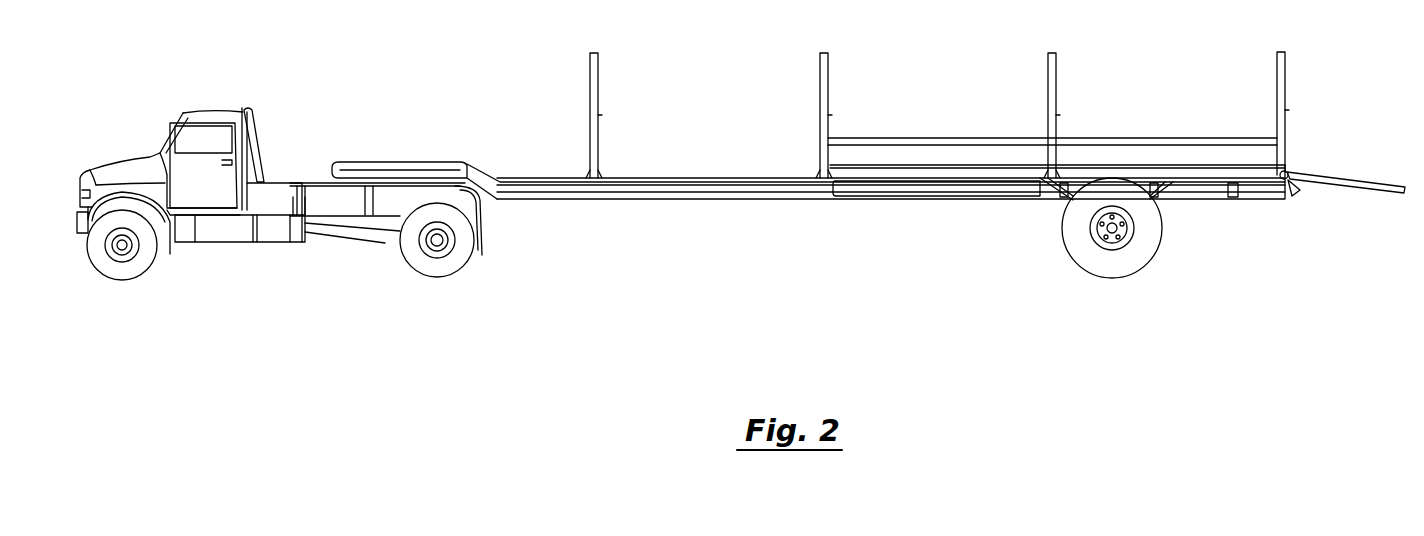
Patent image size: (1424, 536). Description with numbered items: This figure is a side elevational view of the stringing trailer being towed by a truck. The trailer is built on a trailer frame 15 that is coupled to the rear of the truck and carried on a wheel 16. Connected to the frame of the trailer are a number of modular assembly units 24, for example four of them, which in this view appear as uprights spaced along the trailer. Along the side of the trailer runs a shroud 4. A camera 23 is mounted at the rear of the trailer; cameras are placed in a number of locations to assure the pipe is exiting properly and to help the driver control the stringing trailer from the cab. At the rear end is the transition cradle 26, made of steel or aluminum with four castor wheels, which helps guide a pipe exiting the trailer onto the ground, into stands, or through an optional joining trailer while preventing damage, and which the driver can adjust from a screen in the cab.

The trailer frame 15 is at (467, 162).
The shroud 4 is at (1110, 138).
The assembly units 24 is at (1057, 53).
The camera 23 is at (1286, 53).
The transition cradle 26 is at (1332, 177).
The wheel 16 is at (1160, 232).